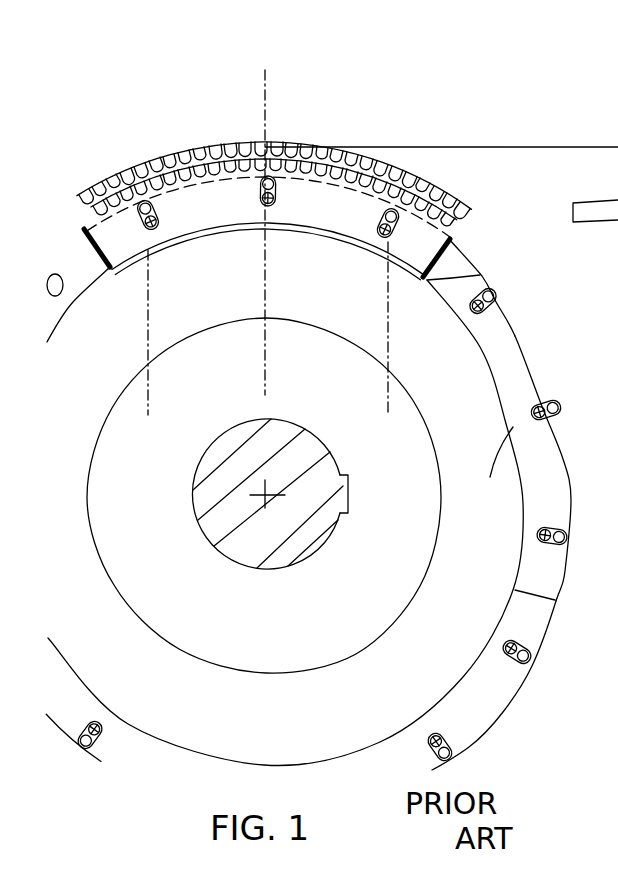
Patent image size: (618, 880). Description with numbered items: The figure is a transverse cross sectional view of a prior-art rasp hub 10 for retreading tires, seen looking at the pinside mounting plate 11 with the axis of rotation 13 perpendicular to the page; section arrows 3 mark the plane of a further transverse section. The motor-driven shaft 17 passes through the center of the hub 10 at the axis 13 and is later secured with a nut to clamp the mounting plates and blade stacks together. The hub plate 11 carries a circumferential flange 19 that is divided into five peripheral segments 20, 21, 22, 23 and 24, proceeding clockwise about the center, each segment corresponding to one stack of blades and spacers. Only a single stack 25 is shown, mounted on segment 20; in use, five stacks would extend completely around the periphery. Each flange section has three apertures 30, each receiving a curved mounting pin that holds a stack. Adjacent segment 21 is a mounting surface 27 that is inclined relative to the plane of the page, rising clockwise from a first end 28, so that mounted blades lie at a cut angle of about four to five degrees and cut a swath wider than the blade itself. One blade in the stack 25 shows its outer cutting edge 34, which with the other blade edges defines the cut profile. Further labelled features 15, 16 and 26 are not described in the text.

The section line 3- 3 is at (243, 78).
The hub 10 is at (481, 250).
The pinside mounting plate 11 is at (522, 341).
The axis of rotation 13 is at (217, 530).
The shaft 15 is at (280, 420).
The keyway 16 is at (345, 482).
The shaft 17 is at (238, 462).
The circumferential flange 19 is at (531, 291).
The peripheral segment 20 is at (404, 272).
The peripheral segment 21 is at (566, 444).
The peripheral segment 22 is at (467, 670).
The peripheral segment 23 is at (93, 690).
The peripheral segment 24 is at (73, 302).
The stack 25 is at (428, 67).
The segment joint 26 is at (533, 600).
The mounting surface 27 is at (528, 378).
The first end 28 is at (480, 290).
The apertures 30 is at (474, 336).
The outer edge 34 is at (436, 174).